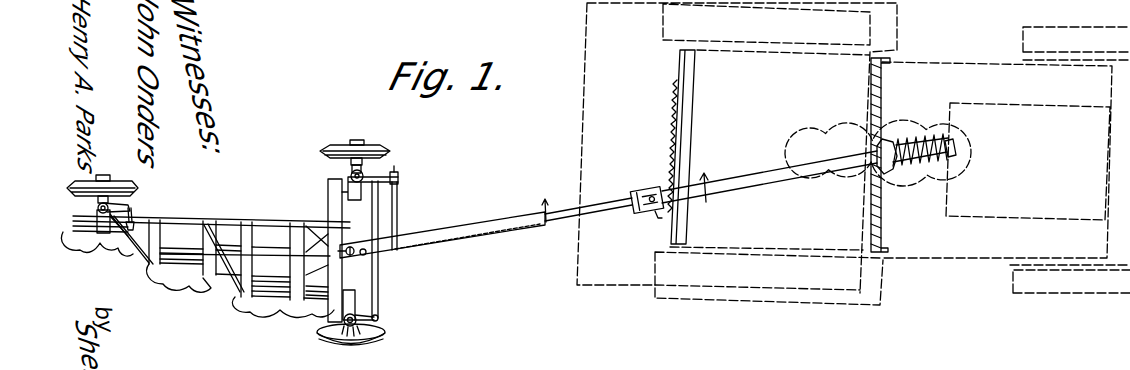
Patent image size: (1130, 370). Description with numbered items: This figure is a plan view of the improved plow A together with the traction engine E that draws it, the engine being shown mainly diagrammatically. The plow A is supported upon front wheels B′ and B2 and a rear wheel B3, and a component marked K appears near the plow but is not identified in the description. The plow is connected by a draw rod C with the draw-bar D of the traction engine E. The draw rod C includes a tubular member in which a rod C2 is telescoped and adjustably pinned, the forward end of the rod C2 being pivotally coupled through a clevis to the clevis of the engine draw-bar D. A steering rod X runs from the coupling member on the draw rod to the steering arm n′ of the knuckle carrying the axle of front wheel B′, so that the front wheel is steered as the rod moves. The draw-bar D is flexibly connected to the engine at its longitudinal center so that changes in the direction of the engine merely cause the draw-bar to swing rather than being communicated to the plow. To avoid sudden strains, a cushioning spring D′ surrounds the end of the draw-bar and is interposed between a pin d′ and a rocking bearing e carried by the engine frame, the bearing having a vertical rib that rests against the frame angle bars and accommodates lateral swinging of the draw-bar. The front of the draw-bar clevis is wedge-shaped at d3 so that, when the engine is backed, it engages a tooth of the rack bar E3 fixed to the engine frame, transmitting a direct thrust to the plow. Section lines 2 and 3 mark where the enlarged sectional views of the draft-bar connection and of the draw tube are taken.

The plow A is at (206, 256).
The front wheel B′ is at (384, 152).
The front wheel B2 is at (388, 334).
The rear wheel B3 is at (128, 186).
The bracket K is at (100, 244).
The steering rod X is at (395, 222).
The steering arm n′ is at (378, 178).
The draw rod C is at (467, 232).
The rod C2 is at (620, 222).
The section line 3 is at (551, 210).
The wedge-shaped front of clevis d3 is at (652, 213).
The rack bar E3 is at (668, 128).
The section line 2 is at (714, 187).
The draw-bar D is at (766, 180).
The spring D′ is at (906, 162).
The rocking bearing e is at (889, 146).
The pin d′ is at (955, 139).
The traction engine E is at (946, 258).